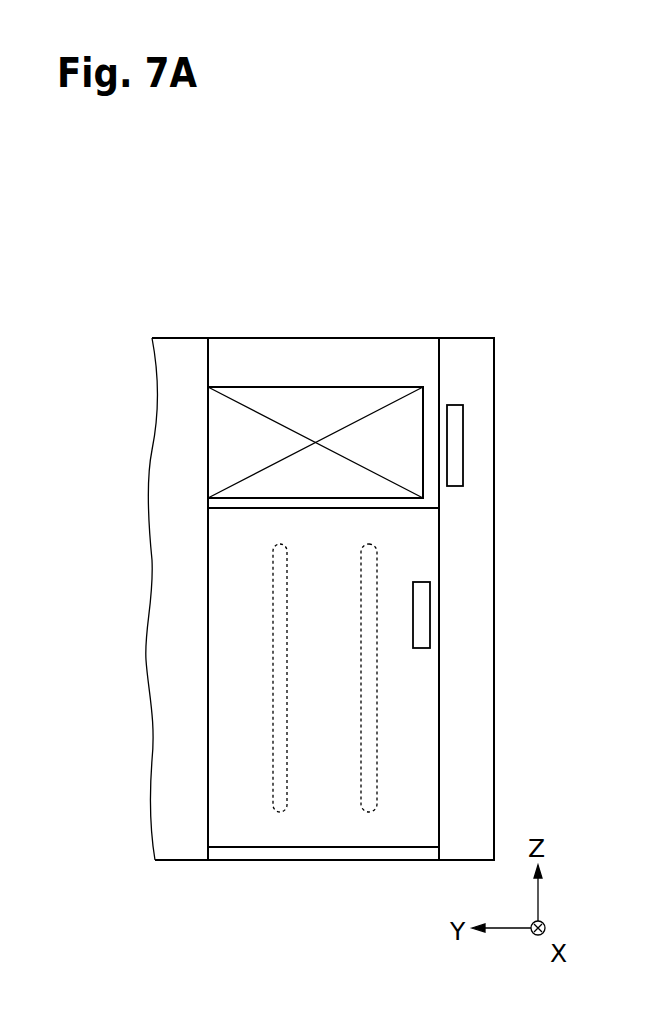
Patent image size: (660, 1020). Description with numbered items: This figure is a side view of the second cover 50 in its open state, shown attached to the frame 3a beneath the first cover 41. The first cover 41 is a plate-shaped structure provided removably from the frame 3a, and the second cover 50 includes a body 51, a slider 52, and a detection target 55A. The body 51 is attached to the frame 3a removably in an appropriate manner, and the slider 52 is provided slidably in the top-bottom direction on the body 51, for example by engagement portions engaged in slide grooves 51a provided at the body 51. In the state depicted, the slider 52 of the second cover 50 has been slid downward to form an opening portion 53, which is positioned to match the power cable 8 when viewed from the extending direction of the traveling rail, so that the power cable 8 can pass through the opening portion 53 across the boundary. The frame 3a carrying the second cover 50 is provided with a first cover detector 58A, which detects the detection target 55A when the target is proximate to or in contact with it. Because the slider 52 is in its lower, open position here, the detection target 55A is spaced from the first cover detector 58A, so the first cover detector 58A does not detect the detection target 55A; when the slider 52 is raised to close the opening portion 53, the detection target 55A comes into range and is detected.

The second cover 50 is at (501, 310).
The first cover 41 is at (186, 824).
The opening portion 53 is at (240, 344).
The frame 3a is at (494, 532).
The power cable 8 is at (337, 387).
The slider 52 is at (408, 700).
The body 51 is at (408, 765).
The slide grooves 51a is at (283, 812).
The first cover detector 58A is at (455, 445).
The detection target 55A is at (422, 618).